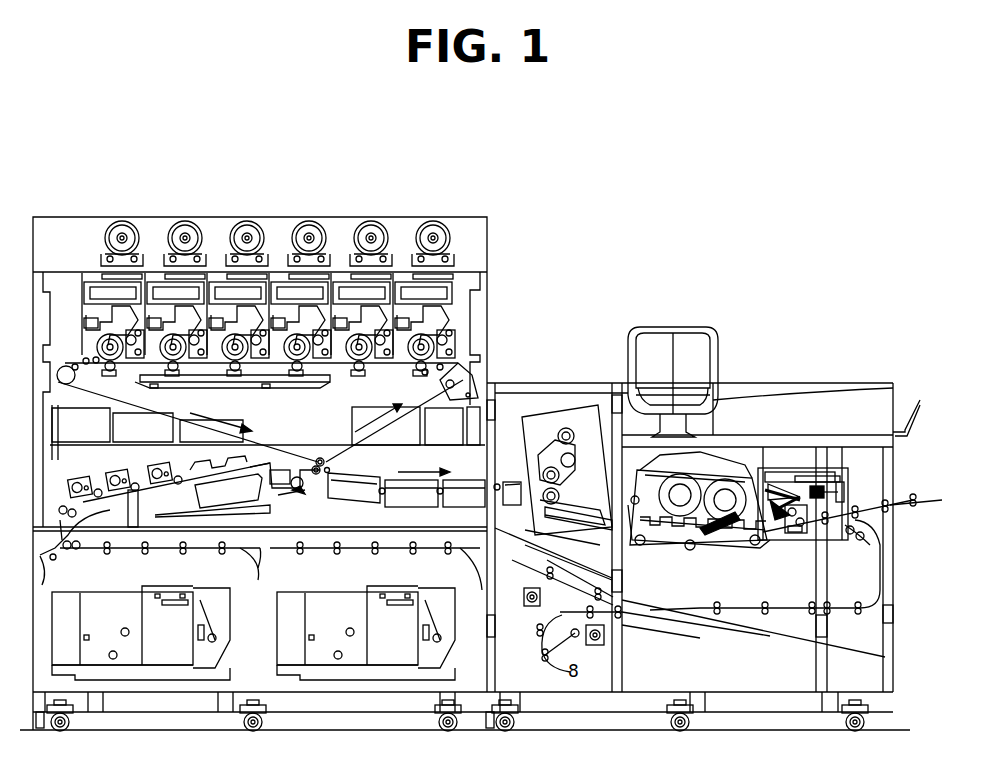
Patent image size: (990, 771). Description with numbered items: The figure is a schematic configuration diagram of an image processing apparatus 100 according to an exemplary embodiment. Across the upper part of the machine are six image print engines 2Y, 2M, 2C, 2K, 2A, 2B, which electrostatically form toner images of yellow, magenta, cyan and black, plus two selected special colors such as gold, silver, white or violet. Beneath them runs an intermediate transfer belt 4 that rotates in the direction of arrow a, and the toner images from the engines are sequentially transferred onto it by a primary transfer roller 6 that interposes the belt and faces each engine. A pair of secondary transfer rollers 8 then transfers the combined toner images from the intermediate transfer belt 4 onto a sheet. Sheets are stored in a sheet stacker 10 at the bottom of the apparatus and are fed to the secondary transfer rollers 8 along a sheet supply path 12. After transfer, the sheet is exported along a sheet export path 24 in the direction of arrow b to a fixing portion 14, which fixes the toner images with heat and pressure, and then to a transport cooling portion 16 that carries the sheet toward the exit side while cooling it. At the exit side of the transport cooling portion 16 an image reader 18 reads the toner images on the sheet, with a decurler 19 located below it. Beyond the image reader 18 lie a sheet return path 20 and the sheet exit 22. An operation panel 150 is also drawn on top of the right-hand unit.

The image processing apparatus 100 is at (522, 333).
The image print engine 2K is at (125, 292).
The image print engine 2C is at (188, 292).
The image print engine 2M is at (250, 292).
The image print engine 2Y is at (312, 292).
The image print engine 2B is at (374, 292).
The image print engine 2A is at (436, 292).
The intermediate transfer belt 4 is at (240, 440).
The primary transfer roller 6 is at (112, 372).
The secondary transfer rollers 8 is at (320, 456).
The sheet stacker 10 is at (172, 642).
The sheet supply path 12 is at (258, 552).
The fixing portion 14 is at (571, 435).
The transport cooling portion 16 is at (700, 490).
The image reader 18 is at (791, 470).
The decurler 19 is at (790, 545).
The sheet return path 20 is at (883, 548).
The sheet exit 22 is at (925, 500).
The sheet export path 24 is at (482, 475).
The operation panel 150 is at (690, 370).